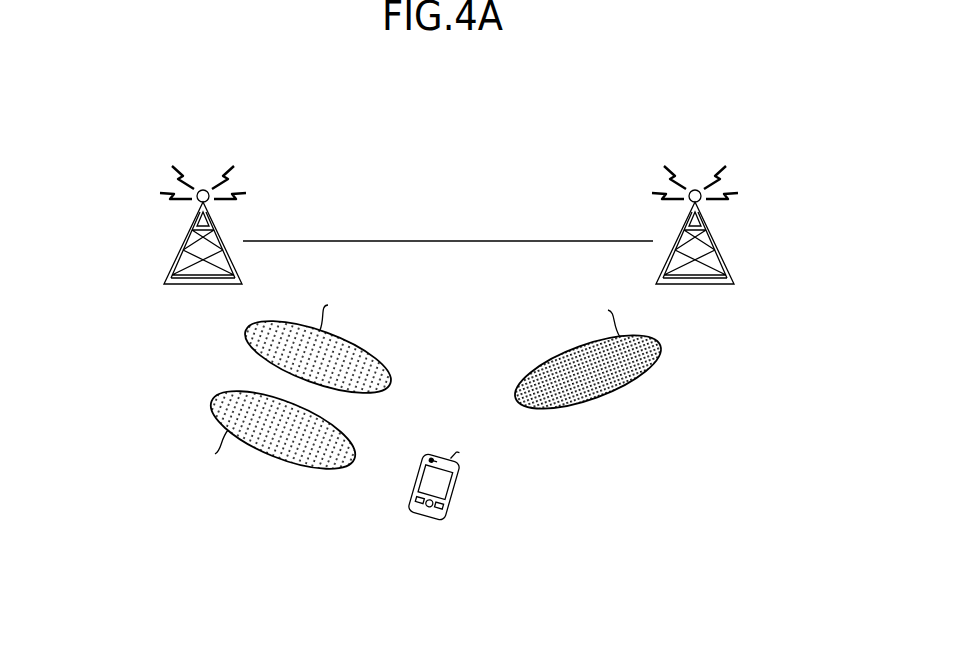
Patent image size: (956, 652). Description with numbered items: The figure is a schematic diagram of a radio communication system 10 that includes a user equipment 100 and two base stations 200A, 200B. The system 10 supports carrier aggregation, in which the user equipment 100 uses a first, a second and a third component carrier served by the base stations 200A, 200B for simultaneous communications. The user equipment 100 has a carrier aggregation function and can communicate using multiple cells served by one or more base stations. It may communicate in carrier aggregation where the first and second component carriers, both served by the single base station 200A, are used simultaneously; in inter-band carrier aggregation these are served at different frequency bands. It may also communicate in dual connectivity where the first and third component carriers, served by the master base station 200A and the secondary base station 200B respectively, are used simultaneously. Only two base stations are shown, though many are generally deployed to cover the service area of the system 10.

The radio communication system 10 is at (118, 101).
The master base station (MeNB) 200A is at (186, 240).
The secondary base station (SeNB) 200B is at (710, 232).
The user equipment 100 is at (452, 498).